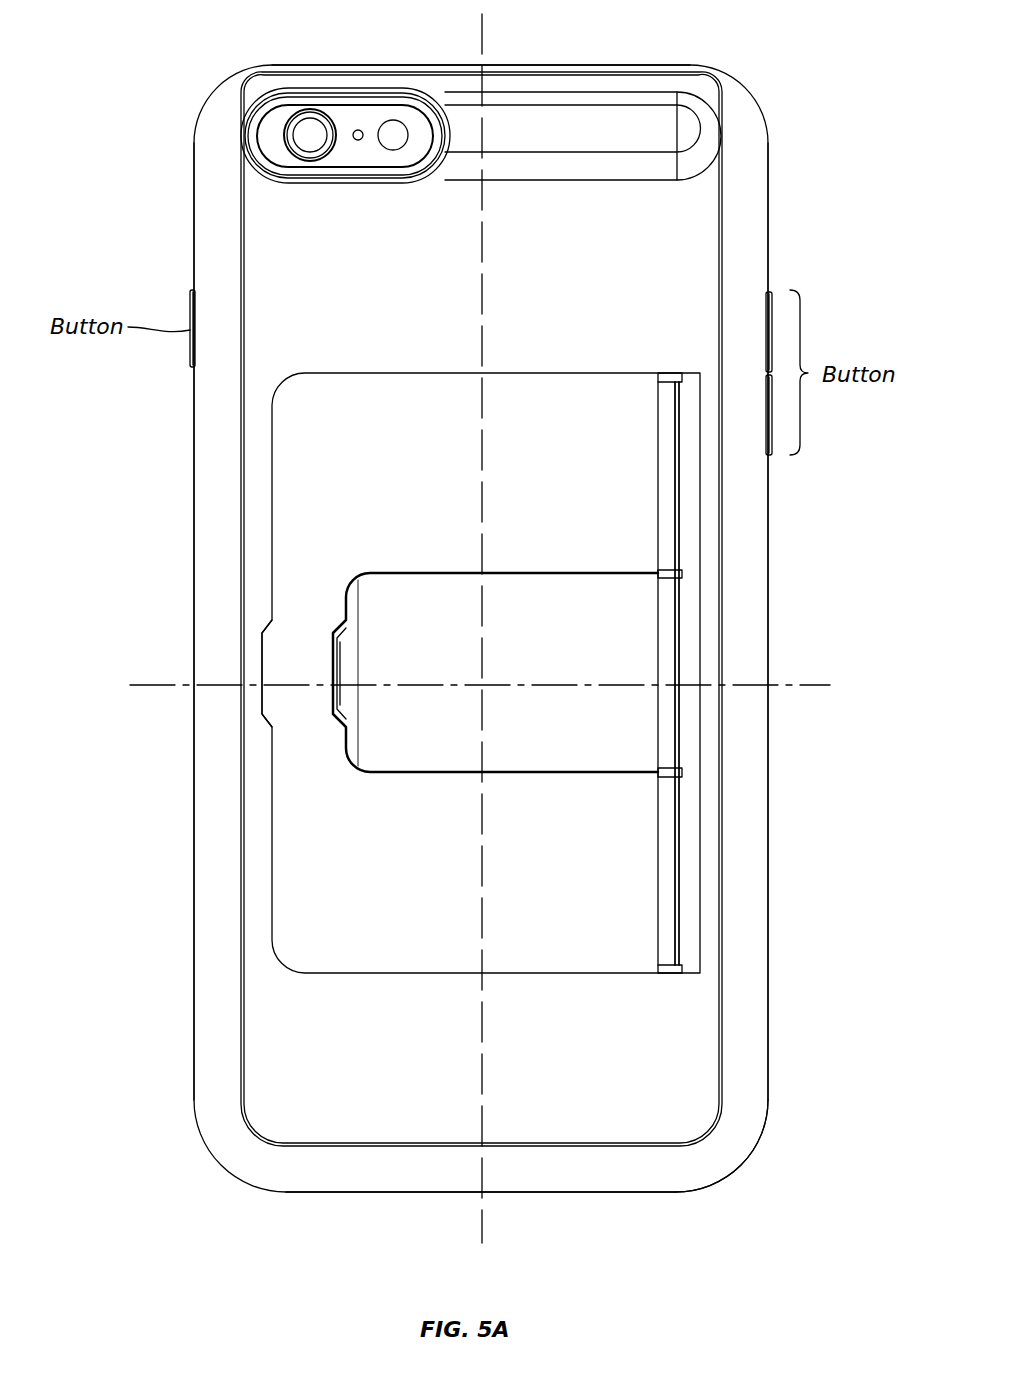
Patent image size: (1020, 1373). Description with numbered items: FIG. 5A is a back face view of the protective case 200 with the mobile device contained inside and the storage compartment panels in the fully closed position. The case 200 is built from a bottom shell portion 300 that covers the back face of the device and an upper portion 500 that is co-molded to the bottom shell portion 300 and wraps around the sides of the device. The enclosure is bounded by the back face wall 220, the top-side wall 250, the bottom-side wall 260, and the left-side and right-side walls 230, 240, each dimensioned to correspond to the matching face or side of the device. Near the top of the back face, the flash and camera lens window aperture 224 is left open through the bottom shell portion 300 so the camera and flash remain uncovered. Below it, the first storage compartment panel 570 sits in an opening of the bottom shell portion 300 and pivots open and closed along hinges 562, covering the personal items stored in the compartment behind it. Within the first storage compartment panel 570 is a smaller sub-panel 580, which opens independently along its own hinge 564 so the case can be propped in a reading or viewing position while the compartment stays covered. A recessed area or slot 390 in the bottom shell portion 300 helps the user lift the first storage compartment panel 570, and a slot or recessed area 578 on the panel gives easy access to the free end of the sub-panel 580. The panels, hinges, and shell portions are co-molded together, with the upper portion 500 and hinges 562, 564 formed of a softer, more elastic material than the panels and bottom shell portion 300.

The upper portion 500 is at (292, 64).
The flash and camera lens window aperture 224 is at (345, 100).
The top-side wall 250 is at (618, 66).
The back face wall 220 is at (690, 240).
The protective case 200 is at (615, 281).
The right-side wall 240 is at (193, 452).
The left-side wall 230 is at (768, 808).
The bottom-side wall 260 is at (350, 1192).
The bottom shell portion 300 is at (745, 1100).
The recessed area or slot 390 is at (268, 658).
The hinges 562 is at (680, 514).
The hinge 564 is at (680, 732).
The first storage compartment panel 570 is at (330, 890).
The slot or recessed area 578 is at (342, 700).
The sub-panel 580 is at (403, 747).